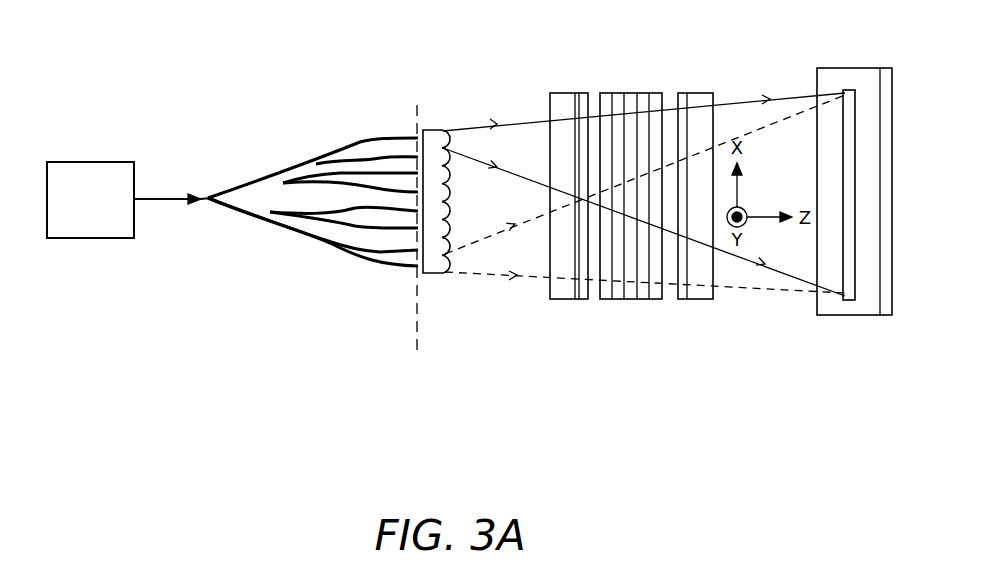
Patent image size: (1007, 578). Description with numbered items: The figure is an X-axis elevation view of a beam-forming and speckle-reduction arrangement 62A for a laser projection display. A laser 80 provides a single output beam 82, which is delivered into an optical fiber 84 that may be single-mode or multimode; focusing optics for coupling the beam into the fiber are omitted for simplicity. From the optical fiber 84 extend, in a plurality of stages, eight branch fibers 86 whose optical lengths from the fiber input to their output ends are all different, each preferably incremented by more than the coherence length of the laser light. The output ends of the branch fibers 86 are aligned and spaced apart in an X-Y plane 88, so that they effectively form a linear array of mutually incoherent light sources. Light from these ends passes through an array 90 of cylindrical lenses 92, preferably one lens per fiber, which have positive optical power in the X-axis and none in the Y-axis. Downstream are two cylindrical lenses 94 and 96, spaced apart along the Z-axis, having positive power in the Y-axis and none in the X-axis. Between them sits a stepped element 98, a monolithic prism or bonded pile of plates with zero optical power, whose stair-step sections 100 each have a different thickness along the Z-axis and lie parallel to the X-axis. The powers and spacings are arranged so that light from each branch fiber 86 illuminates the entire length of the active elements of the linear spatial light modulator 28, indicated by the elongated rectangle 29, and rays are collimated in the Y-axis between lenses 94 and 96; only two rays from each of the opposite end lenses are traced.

The laser 80 is at (85, 236).
The output beam 82 is at (163, 198).
The optical fiber 84 is at (215, 220).
The branch fibers 86 is at (398, 136).
The X-Y plane 88 is at (415, 337).
The array of cylindrical lenses 90 is at (473, 246).
The cylindrical lenses 92 is at (443, 232).
The cylindrical lens 94 is at (569, 307).
The cylindrical lens 96 is at (701, 307).
The stepped element 98 is at (605, 213).
The stair-step sections 100 is at (606, 95).
The linear spatial light modulator 28 is at (823, 221).
The elongated rectangle 29 is at (846, 137).
The beam-forming and speckle-reduction arrangement 62A is at (634, 262).